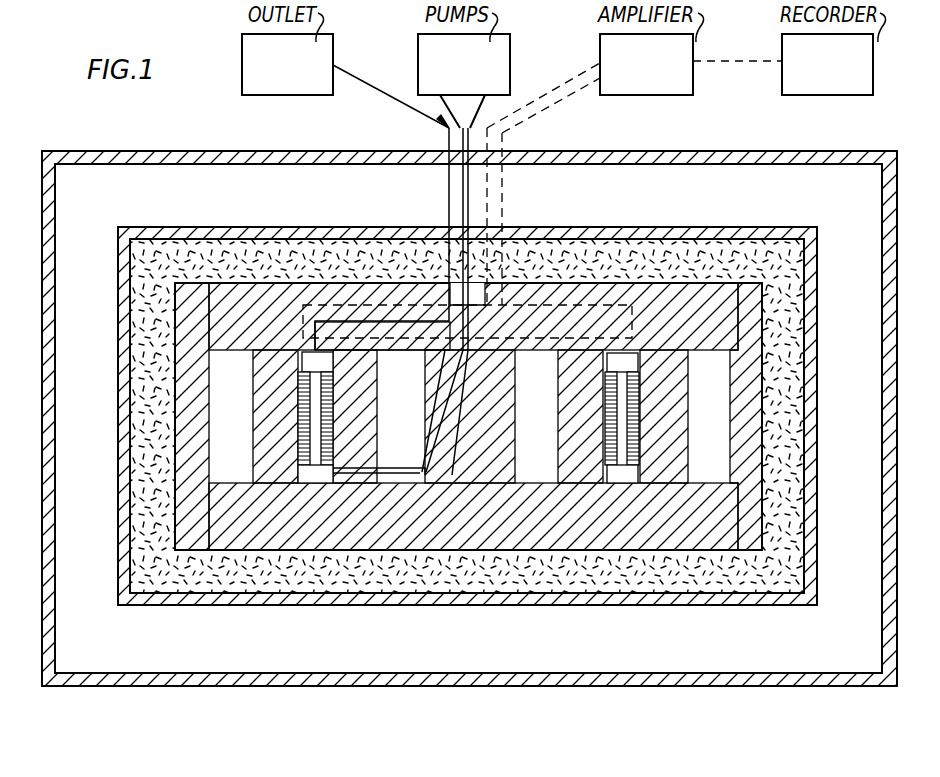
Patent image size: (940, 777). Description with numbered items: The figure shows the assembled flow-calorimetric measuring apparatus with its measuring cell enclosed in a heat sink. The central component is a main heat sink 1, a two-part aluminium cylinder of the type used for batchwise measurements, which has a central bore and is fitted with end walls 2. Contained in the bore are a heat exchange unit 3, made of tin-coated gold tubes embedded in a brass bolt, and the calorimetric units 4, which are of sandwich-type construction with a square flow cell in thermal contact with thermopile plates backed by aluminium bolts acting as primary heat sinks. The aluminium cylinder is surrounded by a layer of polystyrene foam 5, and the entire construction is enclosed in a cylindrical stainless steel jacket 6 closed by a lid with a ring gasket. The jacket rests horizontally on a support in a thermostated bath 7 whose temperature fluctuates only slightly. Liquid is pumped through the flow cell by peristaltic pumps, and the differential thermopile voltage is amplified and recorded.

The main heat sink 1 is at (728, 323).
The end walls 2 is at (192, 440).
The heat exchange unit 3 is at (470, 470).
The calorimetric units 4 is at (327, 420).
The layer of polystyrene foam 5 is at (787, 368).
The stainless steel jacket 6 is at (807, 443).
The thermostated bath 7 is at (868, 490).